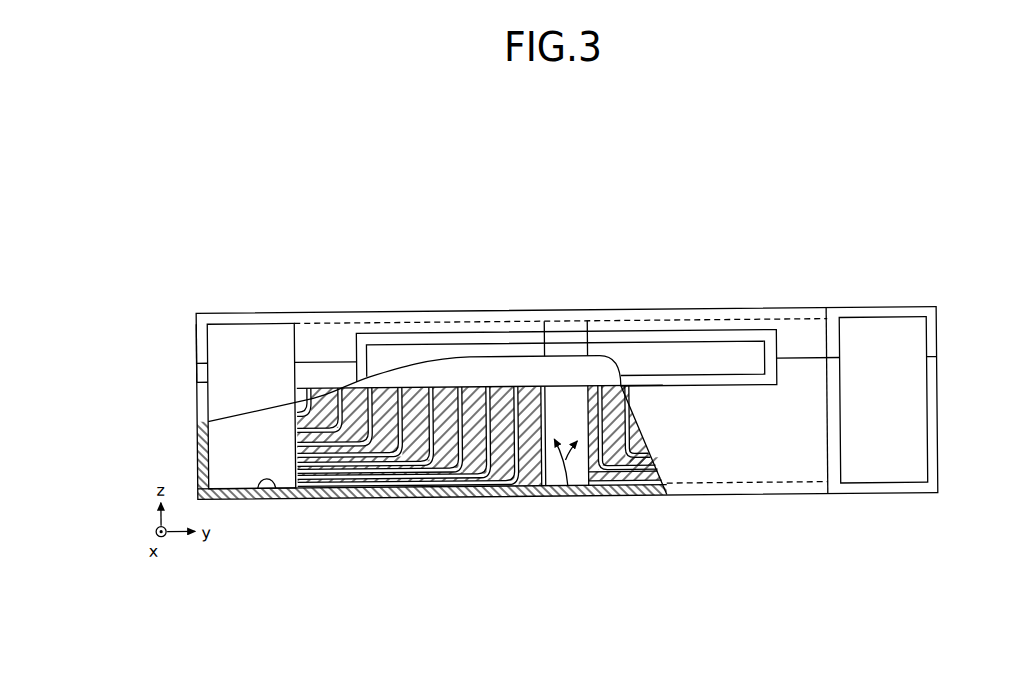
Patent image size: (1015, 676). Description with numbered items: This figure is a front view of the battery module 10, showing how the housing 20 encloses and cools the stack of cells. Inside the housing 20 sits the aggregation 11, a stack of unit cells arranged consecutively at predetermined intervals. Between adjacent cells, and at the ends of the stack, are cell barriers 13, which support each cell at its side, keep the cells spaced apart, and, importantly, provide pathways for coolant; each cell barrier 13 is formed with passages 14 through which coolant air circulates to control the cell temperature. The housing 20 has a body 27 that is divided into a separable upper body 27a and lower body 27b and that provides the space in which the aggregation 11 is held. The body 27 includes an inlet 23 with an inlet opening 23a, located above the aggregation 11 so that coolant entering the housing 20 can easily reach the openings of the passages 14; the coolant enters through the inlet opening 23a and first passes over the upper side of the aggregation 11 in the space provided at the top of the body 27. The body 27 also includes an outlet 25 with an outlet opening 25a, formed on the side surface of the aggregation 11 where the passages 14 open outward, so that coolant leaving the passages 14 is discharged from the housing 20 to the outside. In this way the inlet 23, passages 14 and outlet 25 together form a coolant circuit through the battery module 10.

The battery module 10 is at (571, 273).
The aggregation 11 is at (567, 486).
The cell barrier 13 is at (478, 480).
The passage 14 is at (433, 482).
The housing 20 is at (613, 298).
The inlet 23 is at (458, 375).
The inlet opening 23a is at (690, 345).
The outlet 25 is at (936, 407).
The outlet opening 25a is at (266, 481).
The body 27 is at (134, 330).
The upper body 27a is at (197, 340).
The lower body 27b is at (197, 381).